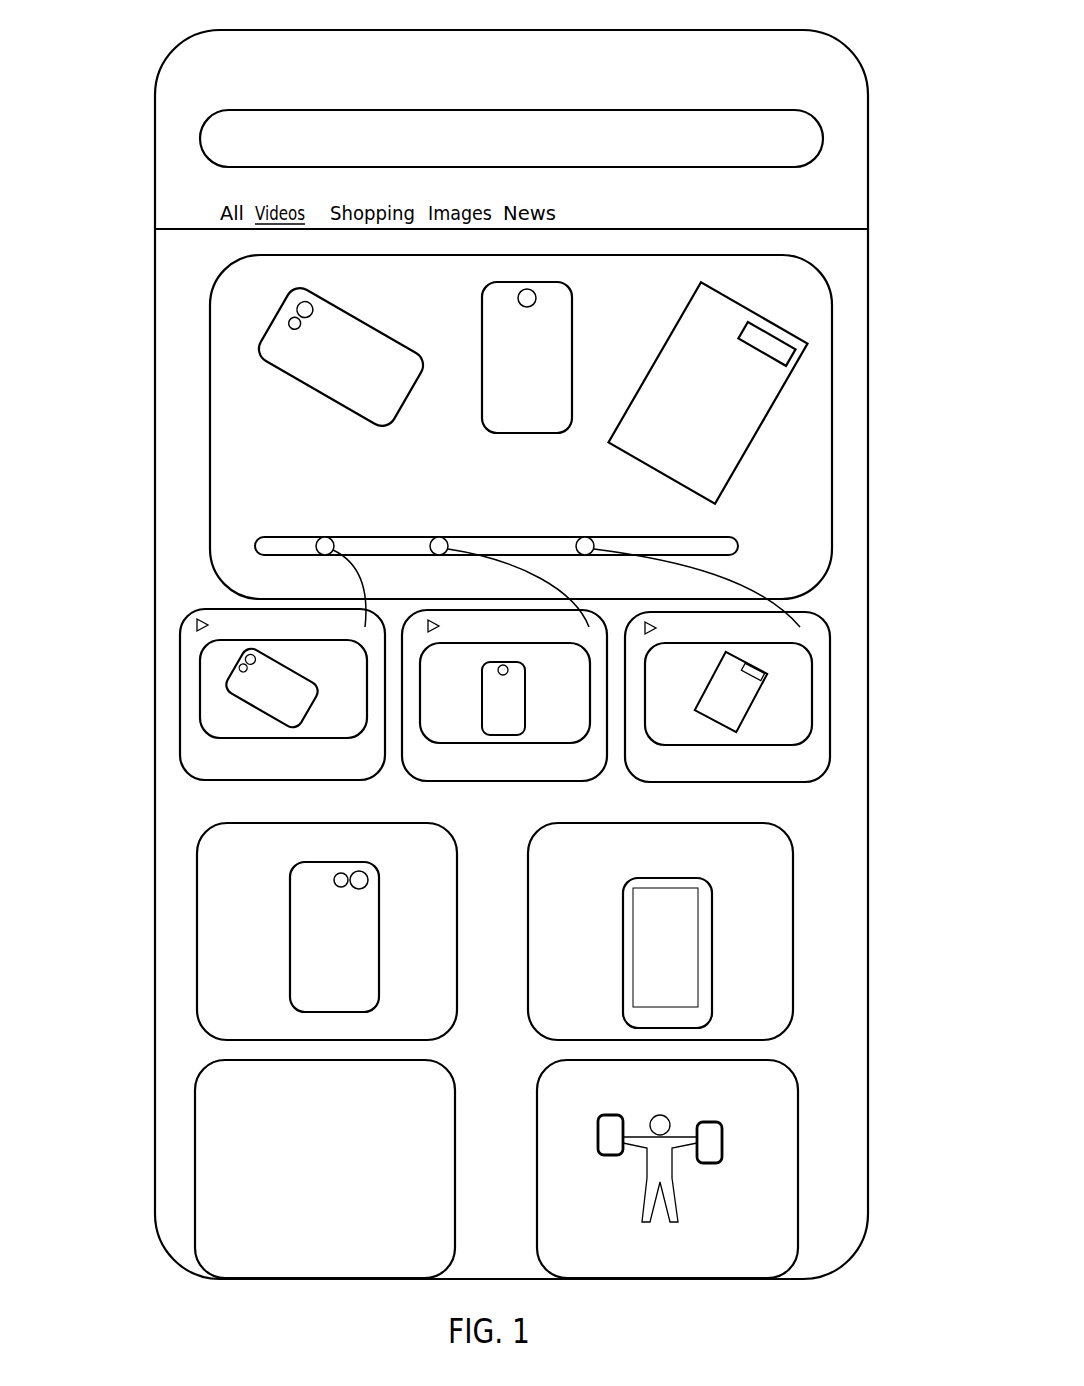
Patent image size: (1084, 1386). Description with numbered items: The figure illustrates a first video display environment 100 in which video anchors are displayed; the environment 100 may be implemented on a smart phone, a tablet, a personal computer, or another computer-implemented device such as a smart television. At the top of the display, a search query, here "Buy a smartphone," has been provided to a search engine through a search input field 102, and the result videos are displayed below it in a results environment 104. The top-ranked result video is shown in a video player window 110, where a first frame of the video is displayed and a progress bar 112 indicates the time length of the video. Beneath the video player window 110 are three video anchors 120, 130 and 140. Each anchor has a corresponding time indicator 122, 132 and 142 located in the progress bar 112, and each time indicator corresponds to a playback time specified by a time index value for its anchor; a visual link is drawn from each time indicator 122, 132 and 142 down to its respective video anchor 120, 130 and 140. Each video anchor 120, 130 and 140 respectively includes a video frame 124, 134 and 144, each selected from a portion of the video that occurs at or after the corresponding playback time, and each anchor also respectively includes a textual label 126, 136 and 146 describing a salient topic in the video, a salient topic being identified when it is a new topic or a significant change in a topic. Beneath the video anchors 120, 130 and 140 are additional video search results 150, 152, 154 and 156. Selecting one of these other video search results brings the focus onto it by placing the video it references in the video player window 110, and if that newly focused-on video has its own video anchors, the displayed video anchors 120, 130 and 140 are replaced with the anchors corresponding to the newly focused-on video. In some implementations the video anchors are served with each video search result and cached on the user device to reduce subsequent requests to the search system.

The video display environment 100 is at (118, 61).
The search input field 102 is at (823, 130).
The results environment 104 is at (870, 268).
The video player window 110 is at (210, 328).
The progress bar 112 is at (255, 546).
The video anchor 120 is at (232, 737).
The time indicator 122 is at (320, 539).
The video frame 124 is at (200, 735).
The textual label 126 is at (226, 762).
The video anchor 130 is at (536, 725).
The time indicator 132 is at (434, 539).
The video frame 134 is at (545, 731).
The textual label 136 is at (553, 765).
The video anchor 140 is at (780, 738).
The time indicator 142 is at (579, 539).
The video frame 144 is at (810, 725).
The textual label 146 is at (773, 768).
The video search result 150 is at (205, 967).
The video search result 152 is at (793, 975).
The video search result 154 is at (203, 1120).
The video search result 156 is at (797, 1168).